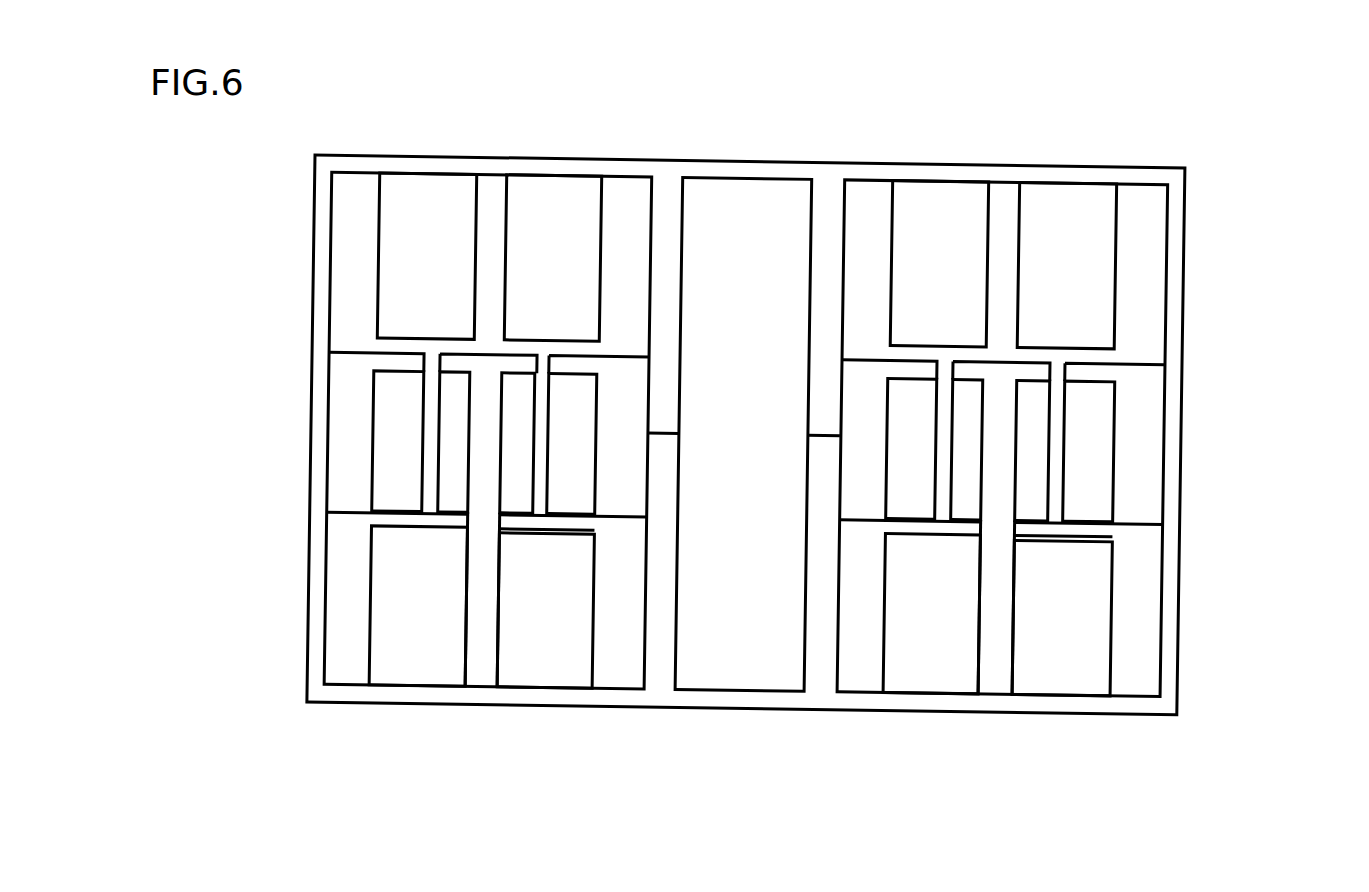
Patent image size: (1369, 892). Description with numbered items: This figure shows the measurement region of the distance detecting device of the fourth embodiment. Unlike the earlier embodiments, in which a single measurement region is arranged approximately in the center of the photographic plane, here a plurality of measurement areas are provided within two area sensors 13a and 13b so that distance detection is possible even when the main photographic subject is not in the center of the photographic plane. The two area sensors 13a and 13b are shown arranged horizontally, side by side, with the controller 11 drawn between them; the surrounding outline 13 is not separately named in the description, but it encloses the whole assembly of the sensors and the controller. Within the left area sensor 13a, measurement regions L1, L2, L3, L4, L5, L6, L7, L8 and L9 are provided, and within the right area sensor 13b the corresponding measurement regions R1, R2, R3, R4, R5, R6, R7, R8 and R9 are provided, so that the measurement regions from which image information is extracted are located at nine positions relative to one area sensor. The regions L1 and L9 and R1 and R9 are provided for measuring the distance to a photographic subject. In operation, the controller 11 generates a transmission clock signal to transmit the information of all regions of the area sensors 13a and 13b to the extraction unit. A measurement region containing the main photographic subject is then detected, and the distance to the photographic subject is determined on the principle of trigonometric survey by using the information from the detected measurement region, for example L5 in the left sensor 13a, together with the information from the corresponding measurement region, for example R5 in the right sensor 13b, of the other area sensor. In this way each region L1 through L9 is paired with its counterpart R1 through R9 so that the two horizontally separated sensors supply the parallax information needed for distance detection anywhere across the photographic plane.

The main body 13 is at (1188, 285).
The area sensor 13a is at (355, 172).
The area sensor 13b is at (1150, 182).
The controller 11 is at (749, 178).
The measurement region L1 is at (452, 172).
The measurement region L2 is at (571, 172).
The measurement region L3 is at (330, 375).
The measurement region L4 is at (375, 438).
The measurement region L5 is at (490, 514).
The measurement region L6 is at (600, 472).
The measurement region L7 is at (650, 389).
The measurement region L8 is at (420, 687).
The measurement region L9 is at (543, 687).
The measurement region R1 is at (940, 180).
The measurement region R2 is at (1062, 182).
The measurement region R3 is at (840, 395).
The measurement region R4 is at (887, 465).
The measurement region R5 is at (1002, 518).
The measurement region R6 is at (1117, 430).
The measurement region R7 is at (1165, 488).
The measurement region R8 is at (925, 693).
The measurement region R9 is at (1058, 693).